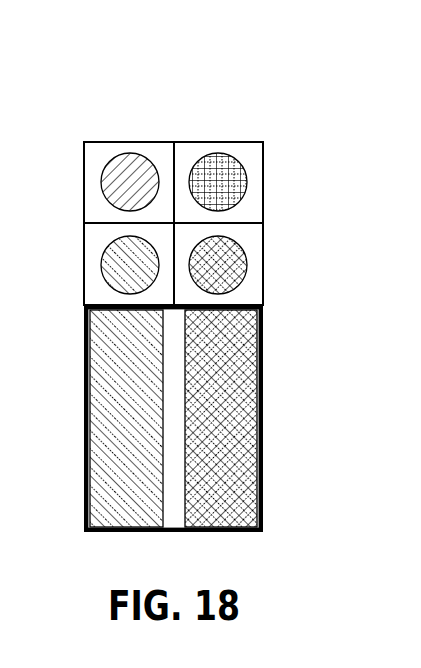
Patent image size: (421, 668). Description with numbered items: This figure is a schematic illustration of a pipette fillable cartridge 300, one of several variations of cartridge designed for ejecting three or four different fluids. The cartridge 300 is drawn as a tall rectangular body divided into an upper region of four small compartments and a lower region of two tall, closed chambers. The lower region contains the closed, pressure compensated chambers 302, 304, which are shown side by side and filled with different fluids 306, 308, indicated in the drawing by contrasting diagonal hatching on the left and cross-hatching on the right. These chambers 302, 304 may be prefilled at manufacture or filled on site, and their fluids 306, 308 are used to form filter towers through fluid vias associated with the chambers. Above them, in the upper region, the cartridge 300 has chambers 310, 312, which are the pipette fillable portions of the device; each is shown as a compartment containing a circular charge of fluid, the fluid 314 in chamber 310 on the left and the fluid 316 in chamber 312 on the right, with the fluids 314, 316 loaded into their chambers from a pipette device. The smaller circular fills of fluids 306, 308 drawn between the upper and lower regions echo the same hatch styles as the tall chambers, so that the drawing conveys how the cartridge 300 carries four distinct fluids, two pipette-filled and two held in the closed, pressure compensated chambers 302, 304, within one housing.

The cartridge 300 is at (177, 266).
The closed pressure compensated chamber 302 is at (80, 444).
The closed pressure compensated chamber 304 is at (267, 409).
The fluid 306 is at (109, 253).
The fluid 308 is at (238, 250).
The chamber 310 is at (116, 153).
The chamber 312 is at (253, 143).
The fluid 314 is at (135, 157).
The fluid 316 is at (218, 153).